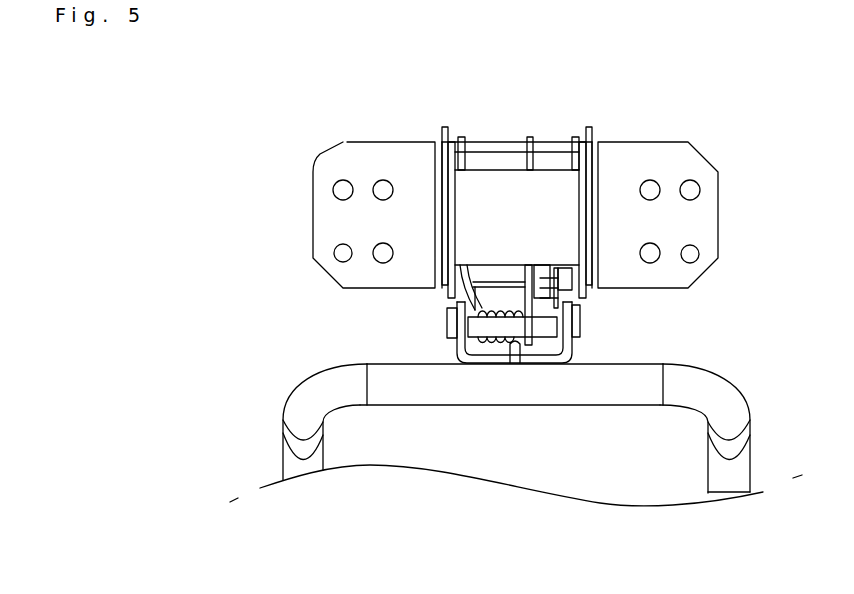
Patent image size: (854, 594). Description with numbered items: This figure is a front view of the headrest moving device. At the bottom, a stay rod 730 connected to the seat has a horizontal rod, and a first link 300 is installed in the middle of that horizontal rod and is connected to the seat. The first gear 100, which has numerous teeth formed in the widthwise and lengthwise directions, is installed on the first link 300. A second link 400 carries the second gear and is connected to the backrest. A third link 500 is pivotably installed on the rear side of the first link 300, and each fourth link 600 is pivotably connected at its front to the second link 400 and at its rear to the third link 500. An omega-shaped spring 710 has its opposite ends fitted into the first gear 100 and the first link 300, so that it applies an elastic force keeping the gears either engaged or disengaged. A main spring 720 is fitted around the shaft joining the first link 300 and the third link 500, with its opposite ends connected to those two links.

The first gear 100 is at (560, 308).
The first link 300 is at (484, 362).
The second link 400 is at (589, 307).
The third link 500 is at (540, 130).
The fourth link 600 is at (681, 136).
The spring 710 is at (562, 278).
The main spring 720 is at (473, 295).
The stay rod 730 is at (607, 390).